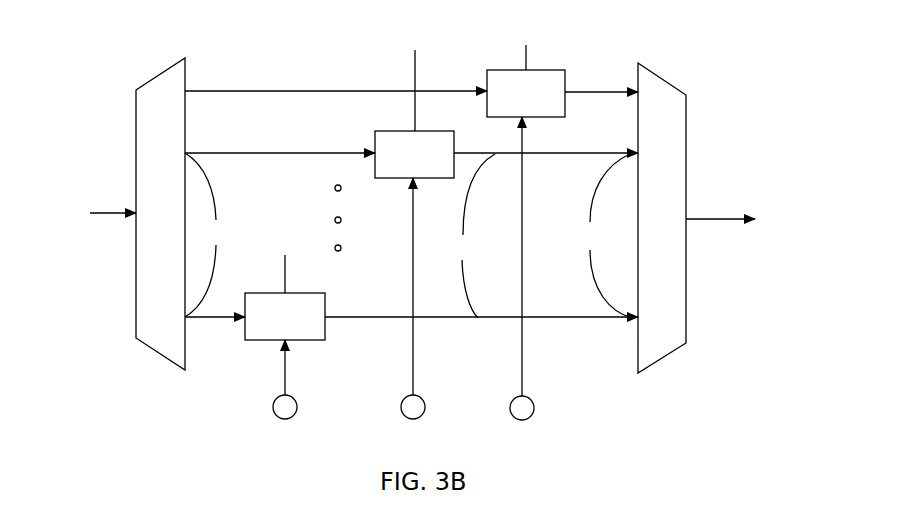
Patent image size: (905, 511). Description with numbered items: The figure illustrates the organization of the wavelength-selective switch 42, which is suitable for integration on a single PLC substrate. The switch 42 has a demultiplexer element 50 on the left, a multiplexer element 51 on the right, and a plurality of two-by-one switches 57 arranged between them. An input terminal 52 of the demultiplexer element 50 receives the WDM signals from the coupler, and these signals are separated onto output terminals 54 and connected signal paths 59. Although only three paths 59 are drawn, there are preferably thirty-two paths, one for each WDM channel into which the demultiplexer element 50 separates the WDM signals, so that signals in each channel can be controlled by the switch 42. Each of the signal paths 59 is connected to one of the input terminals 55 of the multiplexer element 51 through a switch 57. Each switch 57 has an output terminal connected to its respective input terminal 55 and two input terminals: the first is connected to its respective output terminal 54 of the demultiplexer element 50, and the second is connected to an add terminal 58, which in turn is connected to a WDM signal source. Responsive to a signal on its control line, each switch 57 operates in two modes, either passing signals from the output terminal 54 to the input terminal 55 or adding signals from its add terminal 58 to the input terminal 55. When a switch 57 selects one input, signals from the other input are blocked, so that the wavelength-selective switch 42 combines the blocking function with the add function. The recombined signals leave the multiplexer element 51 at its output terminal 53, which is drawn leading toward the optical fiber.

The wavelength-selective switch 42 is at (760, 78).
The demultiplexer element 50 is at (148, 85).
The multiplexer element 51 is at (686, 273).
The input terminal 52 is at (136, 225).
The output light to optical fiber 10 53 is at (687, 219).
The output terminals 54 is at (187, 93).
The input terminals 55 is at (637, 97).
The 2×1 switch 57 is at (487, 98).
The add terminal 58 is at (405, 397).
The signal paths 59 is at (332, 91).